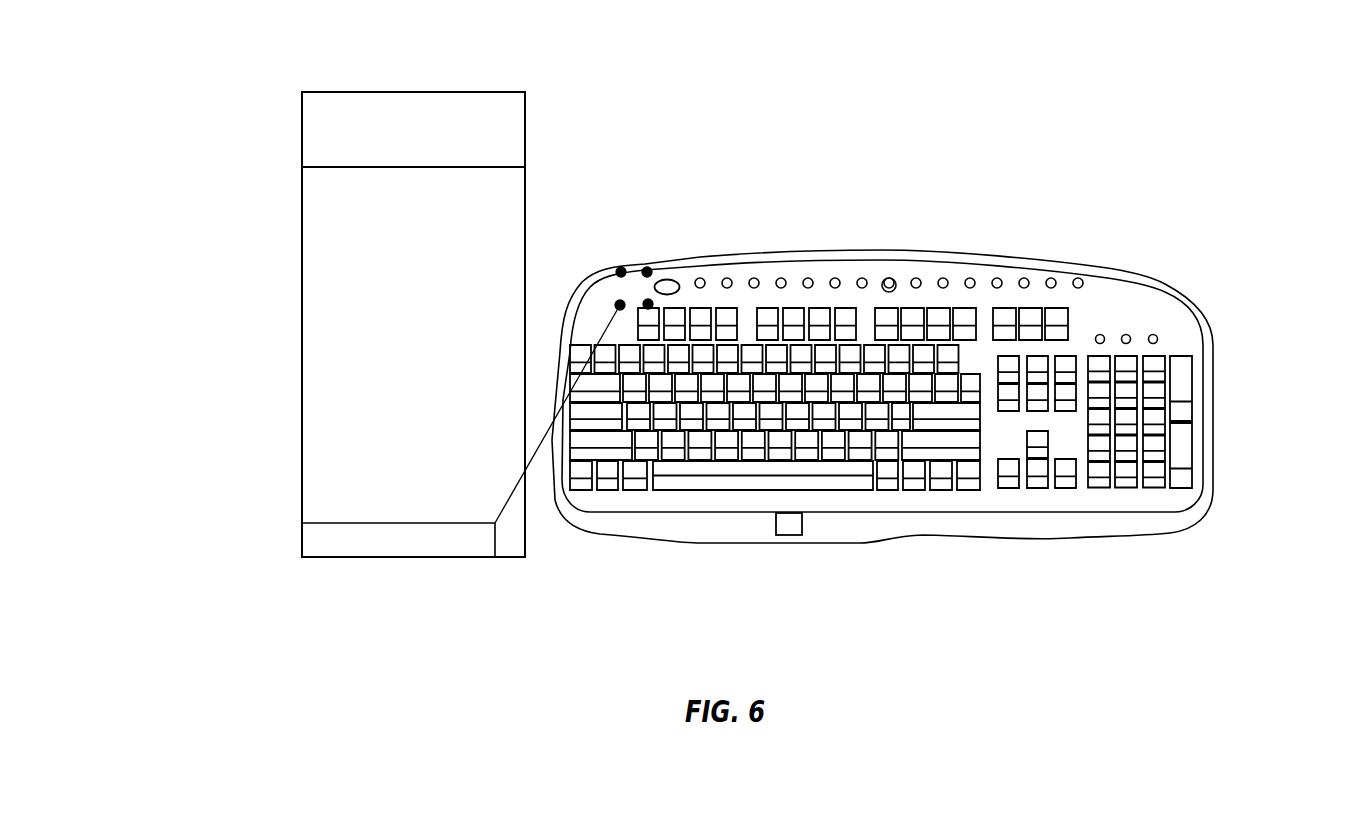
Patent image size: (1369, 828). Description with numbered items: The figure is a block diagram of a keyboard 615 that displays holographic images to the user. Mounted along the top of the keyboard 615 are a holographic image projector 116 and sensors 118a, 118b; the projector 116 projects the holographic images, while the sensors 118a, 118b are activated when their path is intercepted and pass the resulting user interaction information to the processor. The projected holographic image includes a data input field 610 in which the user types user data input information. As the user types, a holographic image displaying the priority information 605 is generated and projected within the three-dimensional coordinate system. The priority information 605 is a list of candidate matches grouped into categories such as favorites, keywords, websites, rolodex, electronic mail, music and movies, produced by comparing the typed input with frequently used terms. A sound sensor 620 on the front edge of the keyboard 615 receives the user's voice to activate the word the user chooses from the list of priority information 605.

The priority information 605 is at (302, 298).
The data input field 610 is at (487, 92).
The keyboard 615 is at (1137, 302).
The sound sensor 620 is at (789, 535).
The holographic image projector 116 is at (667, 282).
The sensor 118a is at (621, 272).
The sensor 118b is at (730, 197).